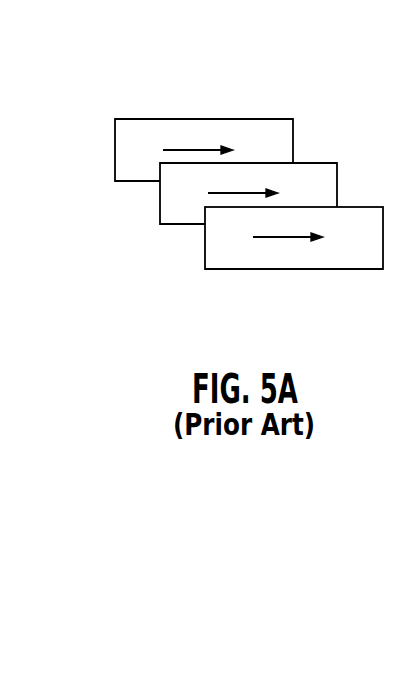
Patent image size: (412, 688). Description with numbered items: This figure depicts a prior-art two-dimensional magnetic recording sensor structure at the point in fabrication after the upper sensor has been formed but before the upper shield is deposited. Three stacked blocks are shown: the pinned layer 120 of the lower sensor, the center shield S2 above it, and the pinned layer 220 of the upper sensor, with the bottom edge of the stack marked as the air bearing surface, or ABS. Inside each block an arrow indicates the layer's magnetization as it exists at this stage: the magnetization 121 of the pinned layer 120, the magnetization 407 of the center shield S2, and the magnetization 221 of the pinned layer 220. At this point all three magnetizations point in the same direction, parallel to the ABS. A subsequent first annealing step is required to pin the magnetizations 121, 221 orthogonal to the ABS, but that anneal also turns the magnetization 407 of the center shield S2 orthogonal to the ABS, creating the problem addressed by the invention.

The pinned layer 120 is at (115, 160).
The magnetization of pinned layer 120 121 is at (188, 150).
The center shield S2 is at (160, 207).
The magnetization of center shield S2 407 is at (240, 193).
The pinned layer 220 is at (205, 247).
The magnetization of pinned layer 220 221 is at (285, 238).
The air bearing surface ABS is at (317, 270).